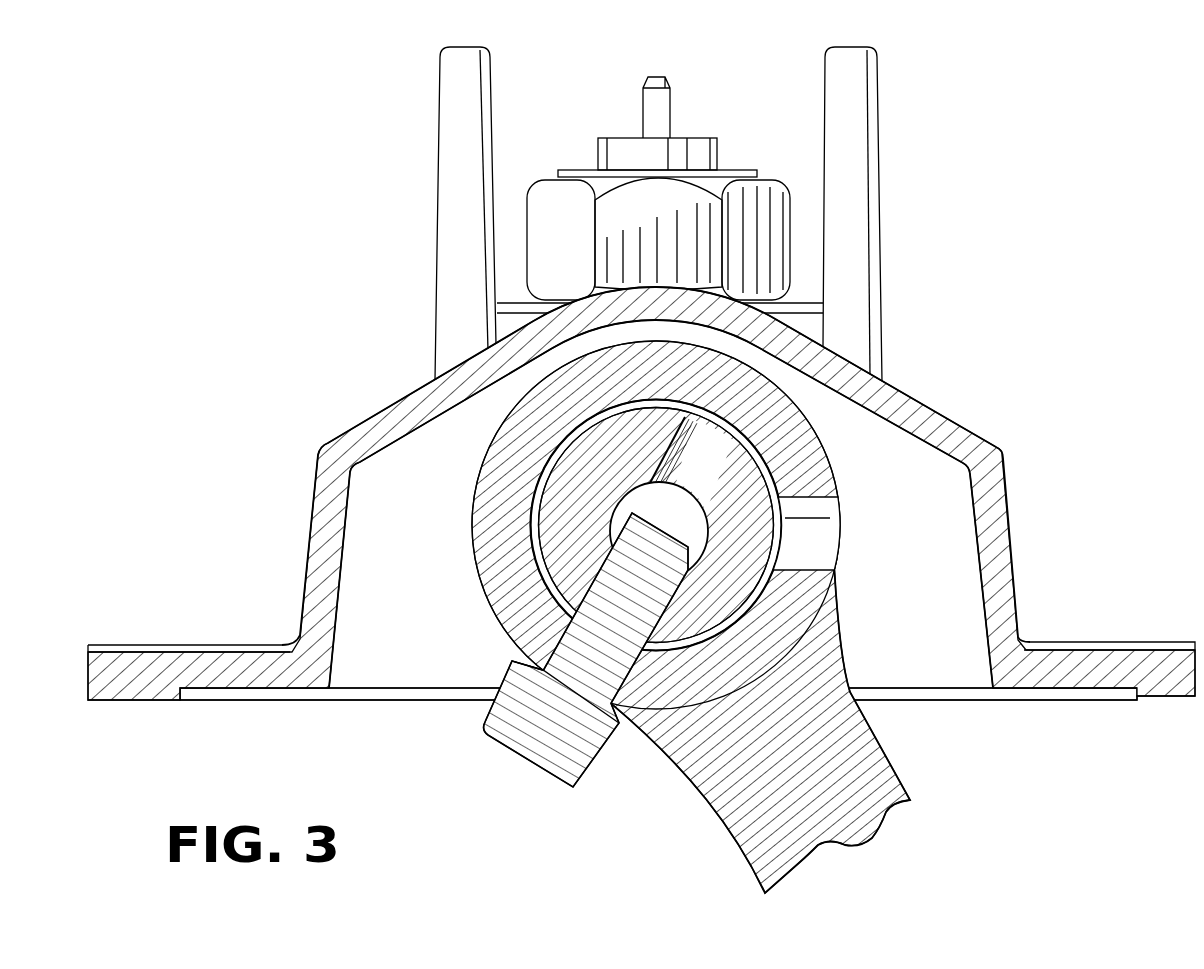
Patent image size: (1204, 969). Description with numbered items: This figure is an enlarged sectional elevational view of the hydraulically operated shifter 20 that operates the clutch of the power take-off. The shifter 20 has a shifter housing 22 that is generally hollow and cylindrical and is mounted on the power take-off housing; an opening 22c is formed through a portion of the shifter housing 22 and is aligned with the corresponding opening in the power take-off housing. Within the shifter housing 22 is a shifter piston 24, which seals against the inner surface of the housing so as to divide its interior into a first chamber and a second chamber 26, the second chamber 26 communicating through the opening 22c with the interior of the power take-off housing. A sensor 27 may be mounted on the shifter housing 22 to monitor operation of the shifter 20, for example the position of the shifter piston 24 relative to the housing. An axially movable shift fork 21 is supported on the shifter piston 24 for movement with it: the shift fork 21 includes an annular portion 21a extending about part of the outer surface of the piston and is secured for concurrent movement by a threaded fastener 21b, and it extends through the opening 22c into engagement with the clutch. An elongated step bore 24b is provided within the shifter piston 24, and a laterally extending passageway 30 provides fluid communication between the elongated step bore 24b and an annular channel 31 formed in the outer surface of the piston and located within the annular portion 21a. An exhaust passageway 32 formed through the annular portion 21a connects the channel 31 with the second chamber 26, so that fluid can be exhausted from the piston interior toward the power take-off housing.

The hydraulically operated shifter 20 is at (641, 473).
The shift fork 21 is at (676, 620).
The annular portion 21a is at (524, 693).
The threaded fastener 21b is at (532, 727).
The shifter housing 22 is at (641, 493).
The opening 22c is at (993, 687).
The shifter piston 24 is at (655, 478).
The elongated step bore 24b is at (683, 530).
The second chamber 26 is at (415, 509).
The sensor 27 is at (678, 153).
The laterally extending passageway 30 is at (715, 447).
The annular channel 31 is at (532, 554).
The exhaust passageway 32 is at (832, 553).